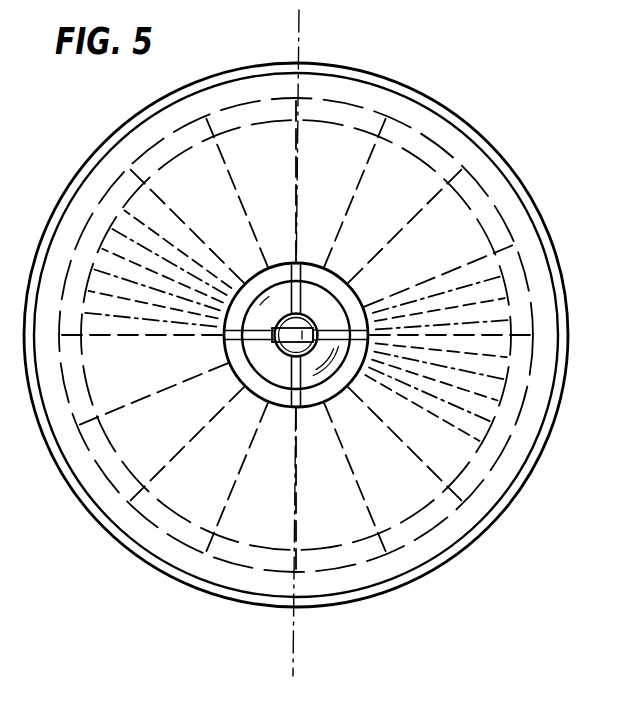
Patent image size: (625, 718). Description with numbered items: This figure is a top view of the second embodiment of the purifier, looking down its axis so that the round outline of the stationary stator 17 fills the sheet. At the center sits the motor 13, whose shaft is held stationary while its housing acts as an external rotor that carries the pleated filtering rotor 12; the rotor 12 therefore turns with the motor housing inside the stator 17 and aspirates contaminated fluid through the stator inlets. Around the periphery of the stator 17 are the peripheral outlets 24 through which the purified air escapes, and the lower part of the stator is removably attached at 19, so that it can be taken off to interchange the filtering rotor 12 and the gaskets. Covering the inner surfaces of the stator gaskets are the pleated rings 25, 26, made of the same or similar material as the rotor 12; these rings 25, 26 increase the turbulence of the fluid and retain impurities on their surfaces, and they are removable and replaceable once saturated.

The stationary stator 17 is at (450, 85).
The pleated filtering rotor 12 is at (440, 163).
The removable attachment 19 is at (519, 182).
The peripheral outlets 24 is at (539, 233).
The motor 13 is at (320, 355).
The pleated ring 25 is at (448, 465).
The pleated ring 26 is at (471, 415).